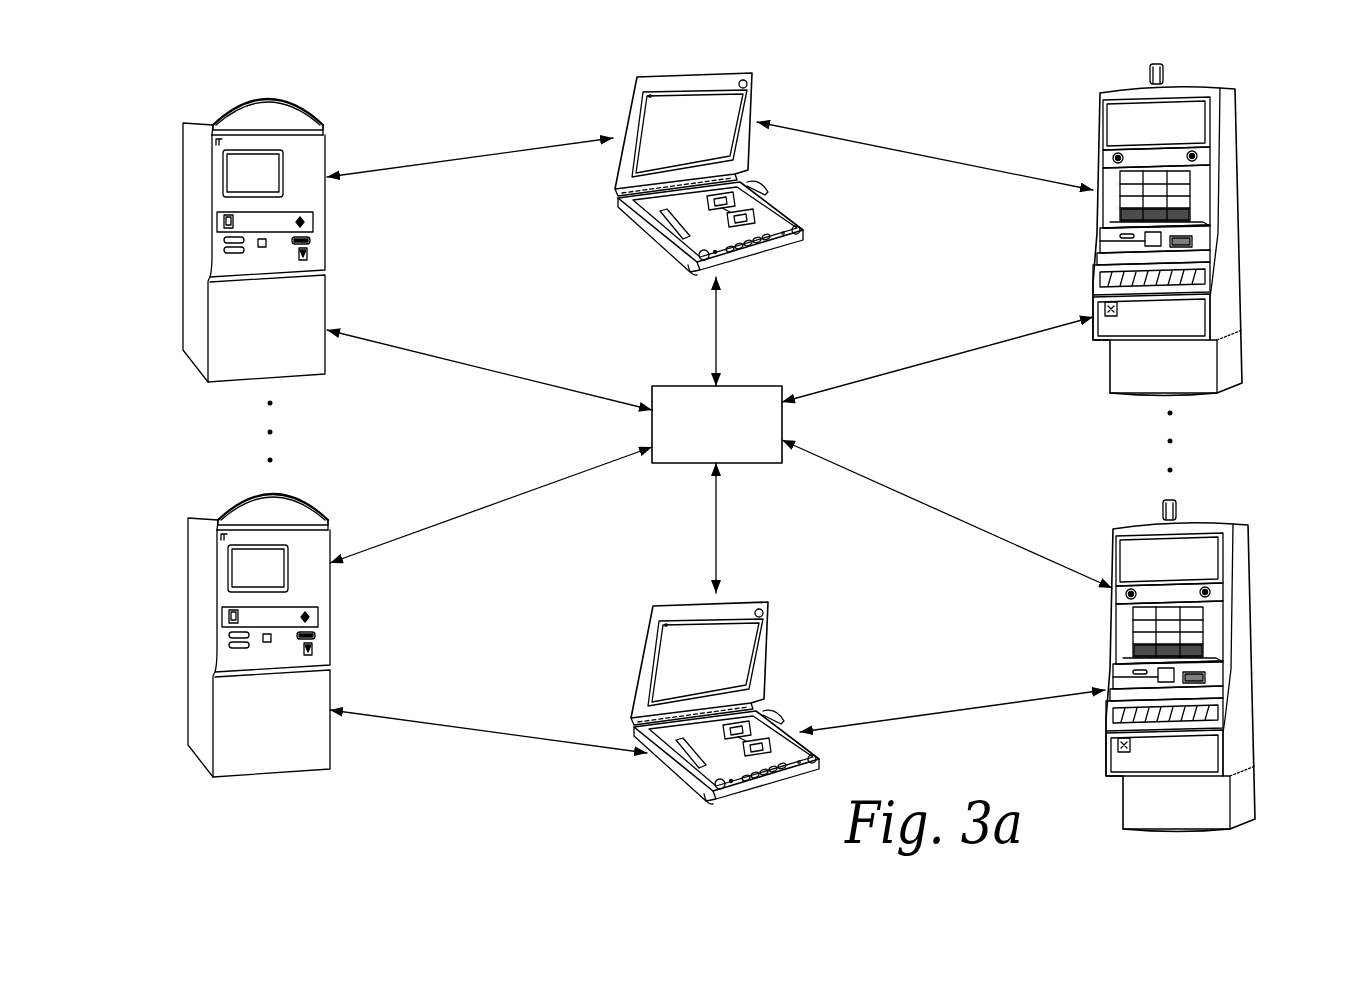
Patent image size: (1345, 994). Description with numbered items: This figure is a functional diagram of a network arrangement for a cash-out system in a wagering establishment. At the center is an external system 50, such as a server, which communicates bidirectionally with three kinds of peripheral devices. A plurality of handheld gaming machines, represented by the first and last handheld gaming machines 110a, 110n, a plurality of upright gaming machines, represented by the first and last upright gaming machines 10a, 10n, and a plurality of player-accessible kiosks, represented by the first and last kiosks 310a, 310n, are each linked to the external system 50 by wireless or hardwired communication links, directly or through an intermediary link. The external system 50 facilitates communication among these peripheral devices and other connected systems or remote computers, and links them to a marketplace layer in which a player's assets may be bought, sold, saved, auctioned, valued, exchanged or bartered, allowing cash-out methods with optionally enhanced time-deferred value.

The kiosk 310a is at (182, 180).
The kiosk 310n is at (187, 604).
The handheld gaming machine 110a is at (760, 93).
The handheld gaming machine 110n is at (771, 637).
The upright gaming machine 10a is at (1233, 147).
The upright gaming machine 10n is at (1247, 585).
The external system 50 is at (767, 384).